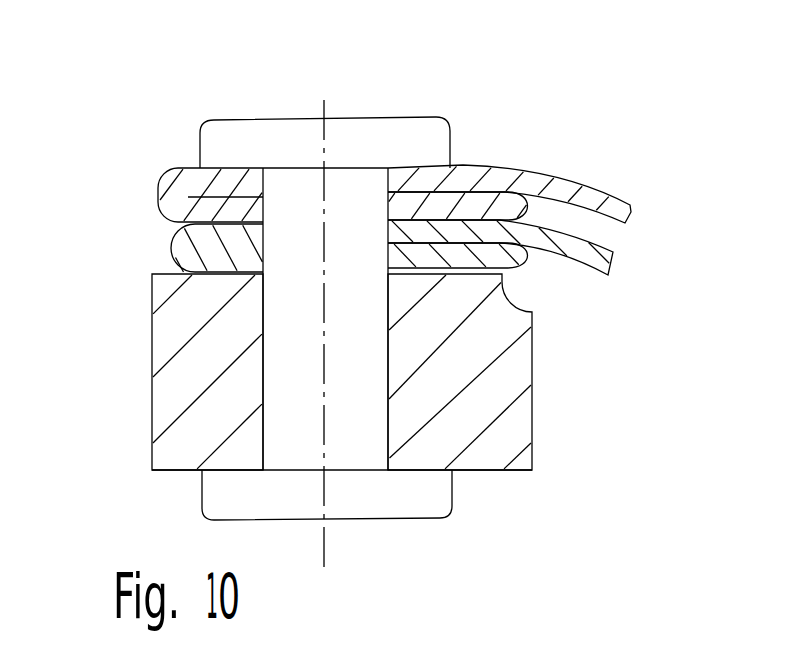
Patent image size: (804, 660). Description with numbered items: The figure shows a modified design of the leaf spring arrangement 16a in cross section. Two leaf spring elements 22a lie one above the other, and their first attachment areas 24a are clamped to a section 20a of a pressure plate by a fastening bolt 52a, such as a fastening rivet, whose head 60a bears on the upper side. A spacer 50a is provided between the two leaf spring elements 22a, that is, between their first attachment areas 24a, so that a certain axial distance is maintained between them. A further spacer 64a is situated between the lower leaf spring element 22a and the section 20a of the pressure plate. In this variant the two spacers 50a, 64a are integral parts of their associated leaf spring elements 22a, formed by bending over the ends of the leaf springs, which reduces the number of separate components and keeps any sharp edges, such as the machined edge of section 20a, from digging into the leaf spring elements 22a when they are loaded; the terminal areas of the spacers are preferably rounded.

The leaf spring arrangement 16a is at (497, 127).
The section of a pressure plate 20a is at (507, 375).
The leaf spring elements 22a is at (550, 233).
The first attachment areas 24a is at (232, 182).
The spacer 50a is at (463, 247).
The fastening bolt 52a is at (350, 422).
The head of the bolt 60a is at (343, 128).
The spacer 64a is at (250, 274).